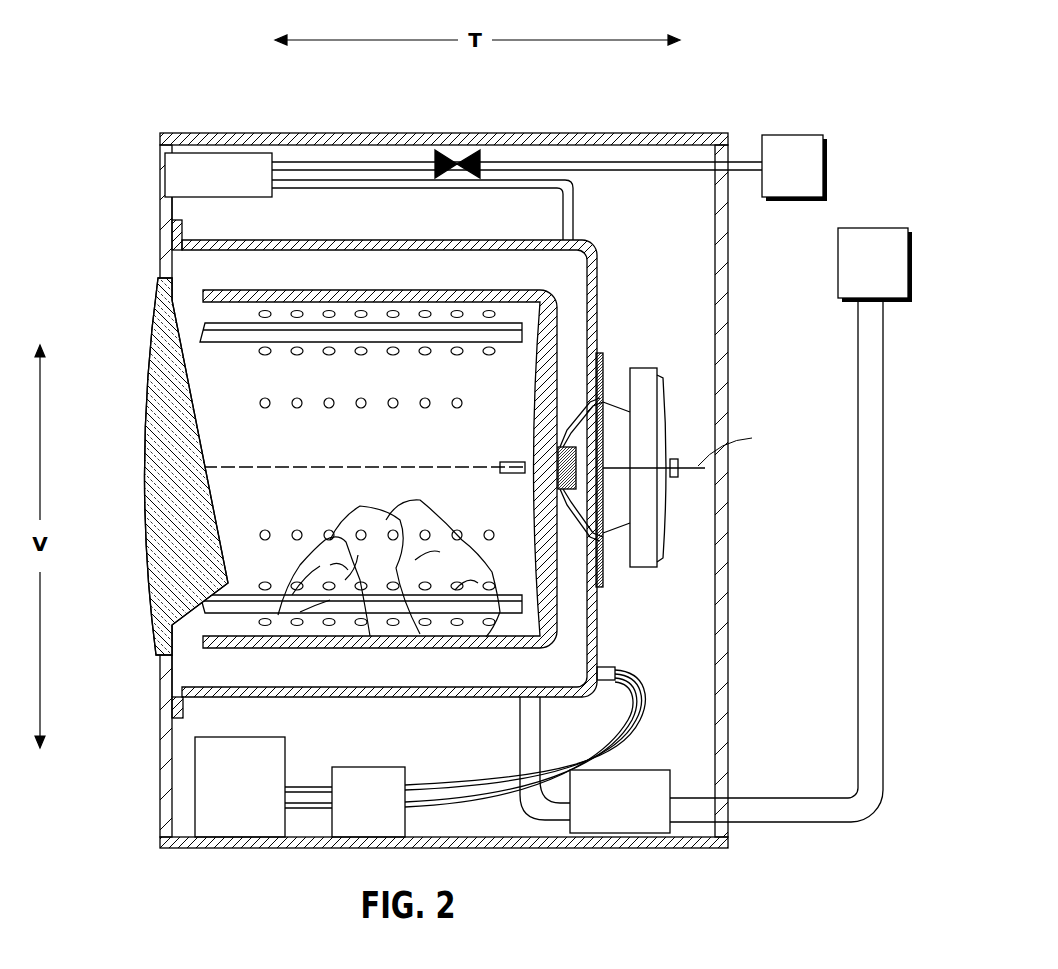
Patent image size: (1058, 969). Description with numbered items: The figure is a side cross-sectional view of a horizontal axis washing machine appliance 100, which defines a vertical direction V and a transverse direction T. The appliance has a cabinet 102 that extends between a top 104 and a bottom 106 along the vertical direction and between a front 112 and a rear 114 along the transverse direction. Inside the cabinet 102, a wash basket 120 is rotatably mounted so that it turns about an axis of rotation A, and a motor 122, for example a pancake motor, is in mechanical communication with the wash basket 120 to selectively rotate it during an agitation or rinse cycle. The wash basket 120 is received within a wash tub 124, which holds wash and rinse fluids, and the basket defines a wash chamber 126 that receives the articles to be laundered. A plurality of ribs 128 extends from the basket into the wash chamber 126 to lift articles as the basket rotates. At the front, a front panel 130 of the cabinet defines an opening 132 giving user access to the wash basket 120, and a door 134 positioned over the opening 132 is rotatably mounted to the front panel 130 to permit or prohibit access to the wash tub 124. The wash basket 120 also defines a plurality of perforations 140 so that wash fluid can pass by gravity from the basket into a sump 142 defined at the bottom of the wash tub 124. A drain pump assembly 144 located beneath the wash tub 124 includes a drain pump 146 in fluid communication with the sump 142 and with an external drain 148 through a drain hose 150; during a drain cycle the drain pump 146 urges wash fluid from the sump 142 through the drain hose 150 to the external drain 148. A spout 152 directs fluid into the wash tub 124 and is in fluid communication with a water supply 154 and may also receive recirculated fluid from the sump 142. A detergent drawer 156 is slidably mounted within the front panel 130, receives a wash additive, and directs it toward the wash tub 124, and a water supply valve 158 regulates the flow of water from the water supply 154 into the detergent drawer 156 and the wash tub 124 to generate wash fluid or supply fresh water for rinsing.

The washing machine appliance 100 is at (188, 72).
The cabinet 102 is at (728, 476).
The top 104 is at (738, 133).
The bottom 106 is at (750, 840).
The front 112 is at (152, 132).
The rear 114 is at (733, 294).
The wash basket 120 is at (375, 296).
The motor 122 is at (640, 405).
The wash tub 124 is at (597, 330).
The wash chamber 126 is at (225, 420).
The ribs 128 is at (305, 466).
The front panel 130 is at (168, 668).
The opening 132 is at (195, 328).
The door 134 is at (158, 523).
The perforations 140 is at (424, 406).
The sump 142 is at (555, 657).
The drain pump assembly 144 is at (688, 721).
The drain pump 146 is at (602, 817).
The external drain 148 is at (858, 275).
The drain hose 150 is at (856, 600).
The spout 152 is at (575, 215).
The water supply 154 is at (777, 178).
The detergent drawer 156 is at (229, 172).
The water supply valve 158 is at (455, 150).